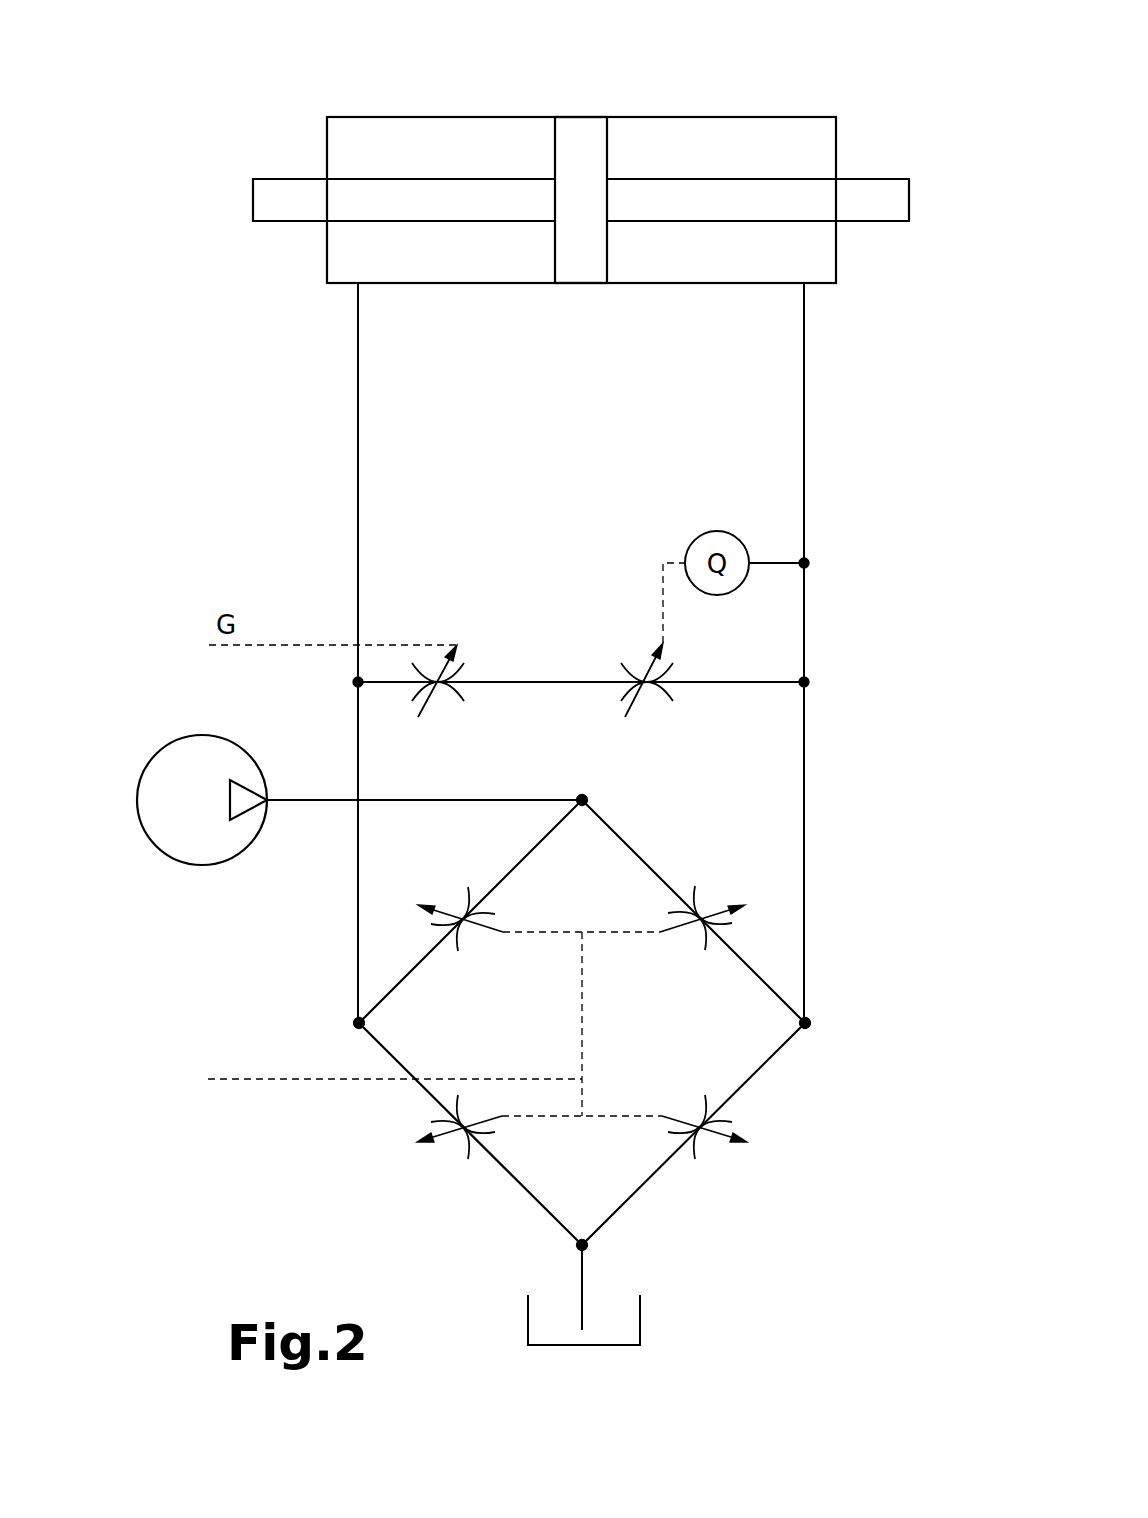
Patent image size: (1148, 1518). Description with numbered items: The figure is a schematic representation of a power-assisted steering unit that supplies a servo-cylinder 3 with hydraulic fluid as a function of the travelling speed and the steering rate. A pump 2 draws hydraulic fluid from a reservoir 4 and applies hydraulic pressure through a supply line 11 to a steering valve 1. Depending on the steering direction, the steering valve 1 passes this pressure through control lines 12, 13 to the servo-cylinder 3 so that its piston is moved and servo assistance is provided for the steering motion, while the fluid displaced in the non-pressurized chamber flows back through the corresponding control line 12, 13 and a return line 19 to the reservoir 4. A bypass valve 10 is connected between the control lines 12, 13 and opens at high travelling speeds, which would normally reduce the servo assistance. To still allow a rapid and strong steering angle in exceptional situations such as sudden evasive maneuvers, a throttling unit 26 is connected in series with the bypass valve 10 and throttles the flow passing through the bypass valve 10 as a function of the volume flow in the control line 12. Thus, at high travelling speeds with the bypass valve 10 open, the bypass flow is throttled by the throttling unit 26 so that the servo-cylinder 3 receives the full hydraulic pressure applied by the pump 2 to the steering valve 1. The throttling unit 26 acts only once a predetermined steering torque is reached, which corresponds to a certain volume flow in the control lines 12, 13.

The steering valve 1 is at (764, 947).
The pump 2 is at (175, 835).
The servo-cylinder 3 is at (686, 146).
The reservoir 4 is at (608, 1325).
The bypass valve 10 is at (433, 695).
The supply line 11 is at (312, 802).
The control line 12 is at (804, 408).
The control line 13 is at (358, 424).
The return line 19 is at (583, 1282).
The throttling unit 26 is at (638, 697).